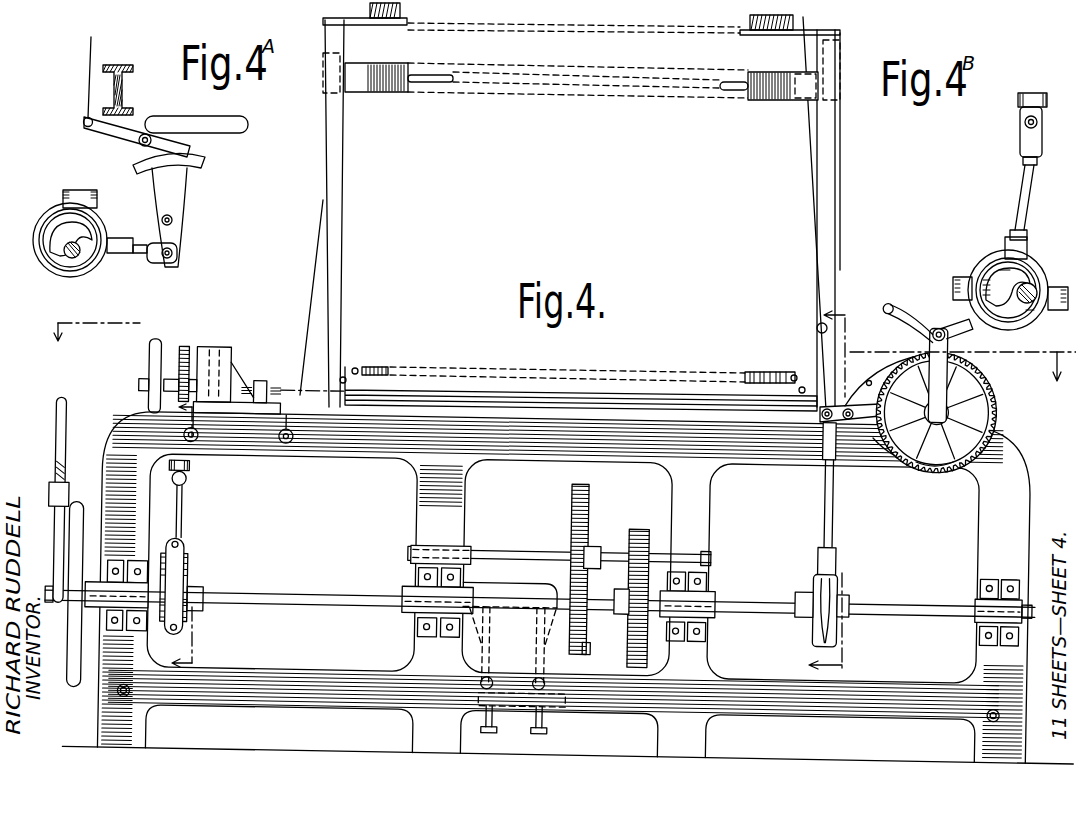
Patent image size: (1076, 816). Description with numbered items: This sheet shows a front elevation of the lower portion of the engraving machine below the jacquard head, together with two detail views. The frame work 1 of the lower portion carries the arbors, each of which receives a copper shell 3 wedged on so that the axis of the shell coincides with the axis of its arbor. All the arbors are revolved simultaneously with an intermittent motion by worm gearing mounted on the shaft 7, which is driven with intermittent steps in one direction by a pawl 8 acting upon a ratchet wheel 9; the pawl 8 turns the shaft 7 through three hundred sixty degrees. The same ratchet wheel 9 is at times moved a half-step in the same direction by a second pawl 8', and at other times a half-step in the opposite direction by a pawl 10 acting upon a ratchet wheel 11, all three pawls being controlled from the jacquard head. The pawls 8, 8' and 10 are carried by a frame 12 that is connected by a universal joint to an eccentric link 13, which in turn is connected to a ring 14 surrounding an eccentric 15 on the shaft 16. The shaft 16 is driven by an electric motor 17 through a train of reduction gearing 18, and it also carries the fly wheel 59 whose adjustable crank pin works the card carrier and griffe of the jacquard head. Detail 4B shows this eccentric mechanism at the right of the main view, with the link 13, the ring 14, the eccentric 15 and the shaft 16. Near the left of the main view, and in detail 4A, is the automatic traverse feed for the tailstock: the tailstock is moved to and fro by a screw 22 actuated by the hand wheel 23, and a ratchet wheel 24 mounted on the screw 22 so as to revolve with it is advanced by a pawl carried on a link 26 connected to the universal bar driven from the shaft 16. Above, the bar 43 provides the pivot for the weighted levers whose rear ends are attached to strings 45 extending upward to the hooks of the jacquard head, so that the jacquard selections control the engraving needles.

In FIG. 4, the frame work 1 is at (1010, 540).
In FIG. 4, the copper shell 3 is at (562, 365).
In FIG. 4, the section line 4A is at (196, 537).
In FIG. 4, the section line 4B is at (839, 492).
In FIG. 4, the shaft 7 is at (53, 428).
In FIG. 4, the pawl 8 is at (821, 346).
In FIG. 4, the pawl 8' is at (908, 310).
In FIG. 4, the ratchet wheel 9 is at (875, 432).
In FIG. 4, the pawl 10 is at (892, 345).
In FIG. 4, the ratchet wheel 11 is at (935, 470).
In FIG. 4, the frame 12 is at (995, 402).
In FIG. 4, the eccentric link 13 is at (832, 505).
In FIG. 4B, the eccentric link 13 is at (1027, 188).
In FIG. 4, the ring 14 is at (838, 572).
In FIG. 4B, the ring 14 is at (1032, 262).
In FIG. 4, the eccentric 15 is at (840, 622).
In FIG. 4B, the eccentric 15 is at (997, 277).
In FIG. 4, the shaft 16 is at (915, 606).
In FIG. 4B, the shaft 16 is at (1030, 302).
In FIG. 4, the electric motor 17 is at (586, 645).
In FIG. 4, the train of reduction gearing 18 is at (587, 522).
In FIG. 4, the screw 22 is at (267, 380).
In FIG. 4, the hand wheel 23 is at (152, 342).
In FIG. 4, the ratchet wheel 24 is at (185, 352).
In FIG. 4, the link 26 is at (183, 398).
In FIG. 4, the bar 43 is at (430, 75).
In FIG. 4, the string 45 is at (400, 12).
In FIG. 4, the fly wheel 59 is at (76, 543).